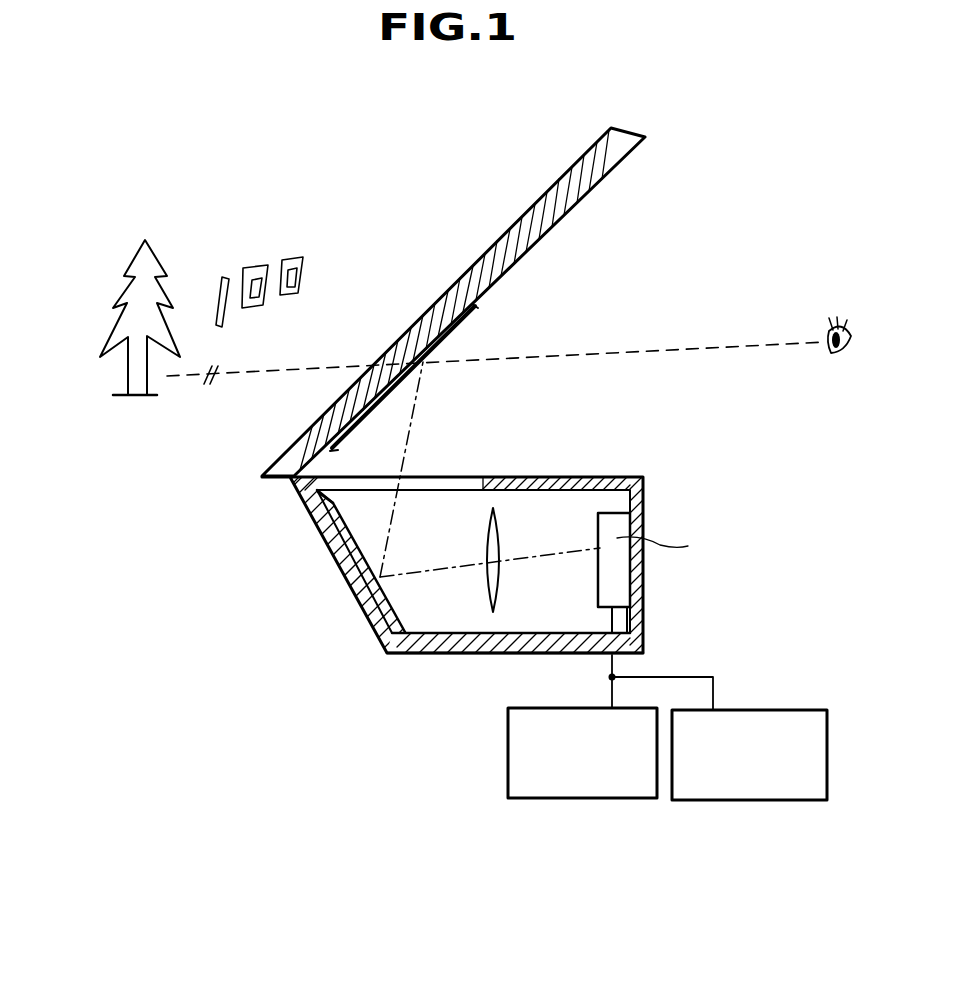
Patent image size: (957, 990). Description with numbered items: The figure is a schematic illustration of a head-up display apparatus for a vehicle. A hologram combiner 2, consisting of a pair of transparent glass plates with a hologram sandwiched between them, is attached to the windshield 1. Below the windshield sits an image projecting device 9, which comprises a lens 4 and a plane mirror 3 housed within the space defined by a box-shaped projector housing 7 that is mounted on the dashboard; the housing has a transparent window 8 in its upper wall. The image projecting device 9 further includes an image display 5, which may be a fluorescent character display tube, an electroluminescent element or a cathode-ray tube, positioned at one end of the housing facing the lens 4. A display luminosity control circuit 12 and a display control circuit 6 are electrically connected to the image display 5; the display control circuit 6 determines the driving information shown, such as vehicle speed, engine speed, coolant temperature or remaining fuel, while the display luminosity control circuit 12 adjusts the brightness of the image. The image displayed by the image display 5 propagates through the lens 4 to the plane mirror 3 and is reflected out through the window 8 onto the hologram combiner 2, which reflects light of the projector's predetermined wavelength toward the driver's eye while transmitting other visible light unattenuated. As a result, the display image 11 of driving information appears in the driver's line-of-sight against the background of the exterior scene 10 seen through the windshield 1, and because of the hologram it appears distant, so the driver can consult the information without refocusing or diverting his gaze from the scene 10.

The windshield 1 is at (527, 213).
The hologram combiner 2 is at (473, 311).
The plane mirror 3 is at (370, 605).
The lens 4 is at (497, 508).
The image display 5 is at (622, 565).
The display control circuit 6 is at (755, 801).
The projector housing 7 is at (457, 655).
The transparent window 8 is at (415, 490).
The image projecting device 9 is at (672, 518).
The exterior scene 10 is at (166, 243).
The display image 11 is at (293, 246).
The display luminosity control circuit 12 is at (575, 803).